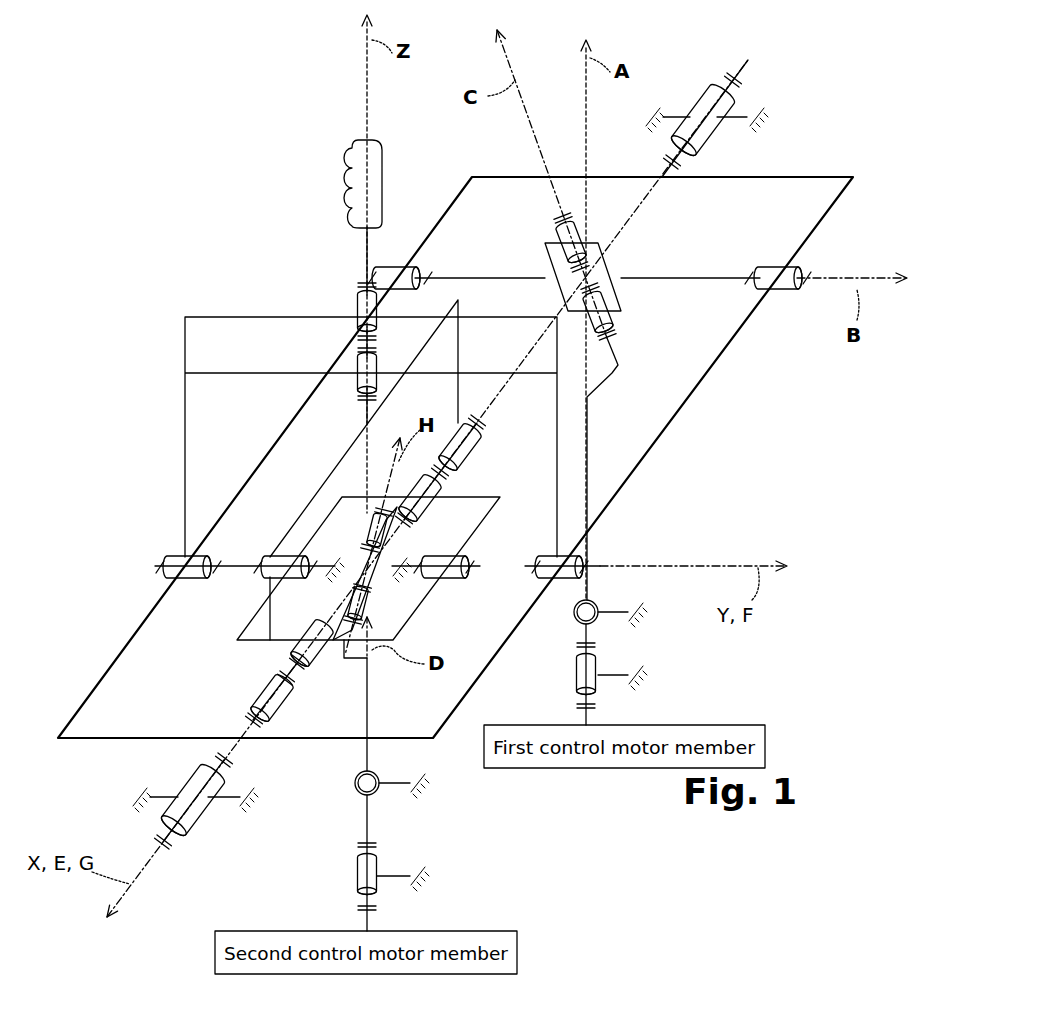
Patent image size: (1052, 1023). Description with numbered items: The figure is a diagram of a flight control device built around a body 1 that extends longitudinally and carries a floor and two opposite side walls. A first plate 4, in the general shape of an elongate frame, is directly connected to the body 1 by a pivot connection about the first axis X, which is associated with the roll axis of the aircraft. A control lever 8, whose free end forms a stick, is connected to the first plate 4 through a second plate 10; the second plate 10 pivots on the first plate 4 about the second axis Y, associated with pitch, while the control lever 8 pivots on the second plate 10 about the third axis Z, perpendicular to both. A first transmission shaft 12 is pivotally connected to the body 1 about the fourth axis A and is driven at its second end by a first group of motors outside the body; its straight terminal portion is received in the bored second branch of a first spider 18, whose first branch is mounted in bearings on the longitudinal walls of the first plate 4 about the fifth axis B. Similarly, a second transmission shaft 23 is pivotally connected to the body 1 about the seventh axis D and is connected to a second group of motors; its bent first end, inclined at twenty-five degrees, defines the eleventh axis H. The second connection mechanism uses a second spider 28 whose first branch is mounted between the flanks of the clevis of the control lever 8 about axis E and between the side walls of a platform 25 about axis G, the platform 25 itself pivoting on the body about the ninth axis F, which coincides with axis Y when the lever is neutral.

The body 1 is at (249, 810).
The first plate 4 is at (243, 743).
The control lever 8 is at (382, 170).
The second plate 10 is at (185, 452).
The first transmission shaft 12 is at (587, 582).
The first spider 18 is at (608, 262).
The second transmission shaft 23 is at (365, 820).
The platform 25 is at (243, 625).
The second spider 28 is at (393, 547).